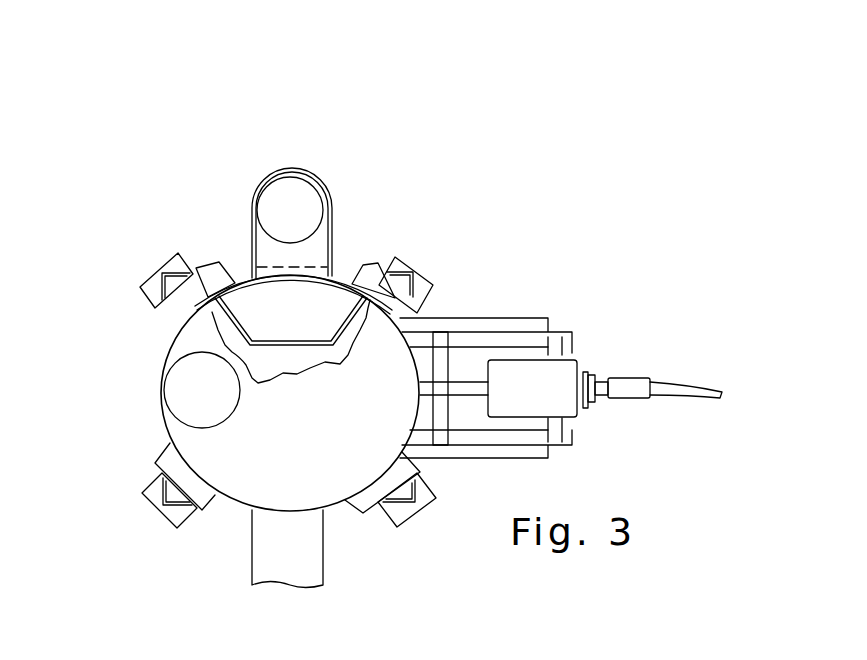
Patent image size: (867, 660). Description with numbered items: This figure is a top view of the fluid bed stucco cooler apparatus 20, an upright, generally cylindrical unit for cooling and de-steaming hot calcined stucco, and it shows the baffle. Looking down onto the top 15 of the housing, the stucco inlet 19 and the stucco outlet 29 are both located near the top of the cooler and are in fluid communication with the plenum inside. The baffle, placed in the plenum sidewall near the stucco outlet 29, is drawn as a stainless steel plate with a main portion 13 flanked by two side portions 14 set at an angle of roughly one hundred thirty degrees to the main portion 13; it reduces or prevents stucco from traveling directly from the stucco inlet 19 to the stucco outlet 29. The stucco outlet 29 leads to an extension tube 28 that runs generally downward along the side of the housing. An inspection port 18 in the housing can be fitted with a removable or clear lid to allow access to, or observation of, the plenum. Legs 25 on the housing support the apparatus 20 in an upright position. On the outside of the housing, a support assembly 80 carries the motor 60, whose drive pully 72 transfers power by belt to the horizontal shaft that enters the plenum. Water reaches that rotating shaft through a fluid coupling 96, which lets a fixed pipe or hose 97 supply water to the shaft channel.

The main portion 13 is at (293, 342).
The side portions 14 is at (222, 319).
The top 15 is at (180, 430).
The inspection port 18 is at (173, 383).
The stucco inlet 19 is at (327, 585).
The fluid bed stucco cooler apparatus 20 is at (383, 123).
The legs 25 is at (177, 267).
The extension tube 28 is at (298, 168).
The stucco outlet 29 is at (275, 268).
The motor 60 is at (563, 368).
The drive pully 72 is at (592, 402).
The support assembly 80 is at (492, 342).
The fluid coupling 96 is at (637, 380).
The pipe or hose 97 is at (693, 385).